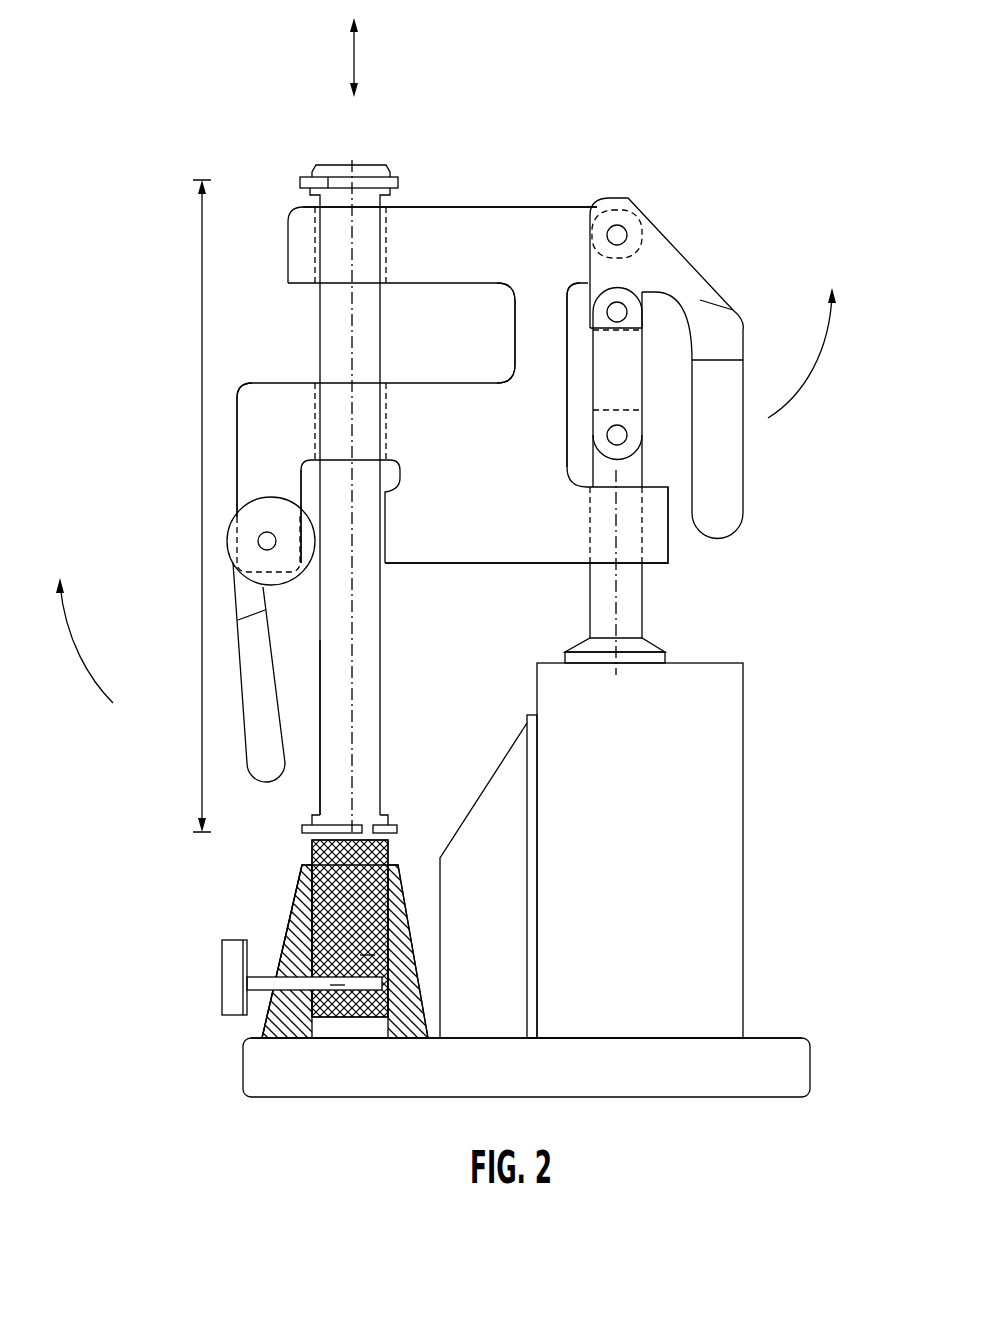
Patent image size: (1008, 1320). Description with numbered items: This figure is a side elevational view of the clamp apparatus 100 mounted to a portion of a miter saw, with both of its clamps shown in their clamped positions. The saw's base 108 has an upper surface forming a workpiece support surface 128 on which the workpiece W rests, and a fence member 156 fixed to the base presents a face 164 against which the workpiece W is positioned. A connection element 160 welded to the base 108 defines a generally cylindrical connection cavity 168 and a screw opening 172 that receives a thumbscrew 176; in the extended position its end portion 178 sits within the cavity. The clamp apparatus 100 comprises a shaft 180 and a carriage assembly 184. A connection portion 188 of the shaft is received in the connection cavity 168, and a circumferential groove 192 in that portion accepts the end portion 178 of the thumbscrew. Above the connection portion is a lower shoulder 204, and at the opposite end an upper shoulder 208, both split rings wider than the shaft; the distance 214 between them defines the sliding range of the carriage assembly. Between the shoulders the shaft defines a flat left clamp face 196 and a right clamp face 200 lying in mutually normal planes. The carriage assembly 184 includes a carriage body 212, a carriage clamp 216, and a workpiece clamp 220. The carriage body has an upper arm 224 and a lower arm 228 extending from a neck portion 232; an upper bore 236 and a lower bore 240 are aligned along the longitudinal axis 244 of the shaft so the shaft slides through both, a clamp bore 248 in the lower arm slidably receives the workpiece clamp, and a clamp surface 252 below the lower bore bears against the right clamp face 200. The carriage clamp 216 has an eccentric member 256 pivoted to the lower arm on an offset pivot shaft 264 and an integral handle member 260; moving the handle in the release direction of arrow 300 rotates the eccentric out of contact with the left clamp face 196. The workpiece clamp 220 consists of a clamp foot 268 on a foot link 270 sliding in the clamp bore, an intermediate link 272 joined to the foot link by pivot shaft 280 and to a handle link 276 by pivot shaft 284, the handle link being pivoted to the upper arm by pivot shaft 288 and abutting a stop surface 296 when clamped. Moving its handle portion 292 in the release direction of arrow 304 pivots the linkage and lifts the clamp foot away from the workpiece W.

The clamp apparatus 100 is at (641, 127).
The base 108 is at (670, 1078).
The workpiece support surface 128 is at (768, 1040).
The workpiece W is at (693, 770).
The fence member 156 is at (500, 817).
The connection element 160 is at (402, 977).
The face 164 is at (550, 765).
The connection cavity 168 is at (335, 905).
The screw opening 172 is at (312, 975).
The thumbscrew 176 is at (222, 990).
The end portion 178 is at (300, 925).
The shaft 180 is at (338, 355).
The carriage assembly 184 is at (430, 237).
The connection portion 188 is at (370, 955).
The groove 192 is at (338, 982).
The left clamp face 196 is at (318, 632).
The right clamp face 200 is at (382, 652).
The lower shoulder 204 is at (392, 825).
The upper shoulder 208 is at (390, 172).
The carriage body 212 is at (270, 427).
The distance 214 is at (202, 358).
The carriage clamp 216 is at (212, 584).
The workpiece clamp 220 is at (723, 224).
The upper arm 224 is at (532, 252).
The lower arm 228 is at (490, 490).
The neck portion 232 is at (540, 338).
The upper bore 236 is at (335, 226).
The lower bore 240 is at (365, 395).
The longitudinal axis 244 is at (355, 62).
The clamp bore 248 is at (605, 552).
The clamp surface 252 is at (387, 522).
The eccentric member 256 is at (273, 513).
The handle member 260 is at (245, 727).
The pivot shaft 264 is at (262, 541).
The clamp foot 268 is at (648, 658).
The foot link 270 is at (622, 600).
The intermediate link 272 is at (607, 372).
The handle link 276 is at (668, 255).
The pivot shaft 280 is at (617, 435).
The pivot shaft 284 is at (720, 310).
The pivot shaft 288 is at (617, 235).
The handle portion 292 is at (730, 497).
The stop surface 296 is at (585, 265).
The arrow 300 is at (80, 660).
The arrow 304 is at (820, 362).